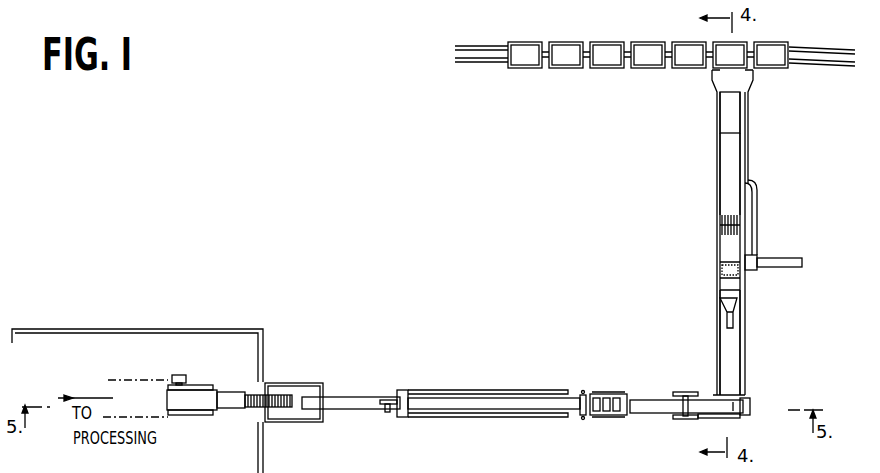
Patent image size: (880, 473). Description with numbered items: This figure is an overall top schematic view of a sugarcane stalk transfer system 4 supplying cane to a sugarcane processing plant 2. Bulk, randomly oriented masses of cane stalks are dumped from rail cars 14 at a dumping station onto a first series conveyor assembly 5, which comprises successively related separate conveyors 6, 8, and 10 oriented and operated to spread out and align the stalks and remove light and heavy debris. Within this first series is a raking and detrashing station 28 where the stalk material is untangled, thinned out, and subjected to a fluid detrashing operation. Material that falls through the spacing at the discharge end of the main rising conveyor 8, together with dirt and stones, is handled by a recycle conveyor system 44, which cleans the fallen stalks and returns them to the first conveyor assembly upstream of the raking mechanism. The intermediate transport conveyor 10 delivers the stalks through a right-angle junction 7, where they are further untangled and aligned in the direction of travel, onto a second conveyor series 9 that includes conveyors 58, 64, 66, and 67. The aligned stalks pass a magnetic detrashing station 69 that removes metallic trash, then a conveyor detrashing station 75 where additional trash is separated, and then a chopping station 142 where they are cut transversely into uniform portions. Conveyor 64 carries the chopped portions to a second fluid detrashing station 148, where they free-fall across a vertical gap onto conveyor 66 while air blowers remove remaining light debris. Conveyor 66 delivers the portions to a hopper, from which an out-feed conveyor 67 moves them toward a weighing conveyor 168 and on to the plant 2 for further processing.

The sugarcane processing plant 2 is at (180, 329).
The transfer system 4 is at (553, 256).
The first series conveyor assembly 5 is at (750, 166).
The conveyor 6 is at (733, 118).
The right-angle junction 7 is at (749, 396).
The main rising conveyor 8 is at (727, 185).
The second conveyor series 9 is at (646, 420).
The intermediate transport conveyor 10 is at (730, 353).
The rail cars 14 is at (720, 44).
The raking and detrashing station 28 is at (715, 277).
The recycle conveyor system 44 is at (758, 252).
The conveyor 58 is at (733, 411).
The conveyor 64 is at (520, 413).
The conveyor 66 is at (360, 411).
The out-feed conveyor 67 is at (252, 413).
The magnetic detrashing station 69 is at (689, 387).
The conveyor detrashing station 75 is at (625, 389).
The chopping station 142 is at (582, 391).
The second fluid detrashing station 148 is at (414, 392).
The weighing conveyor 168 is at (196, 413).